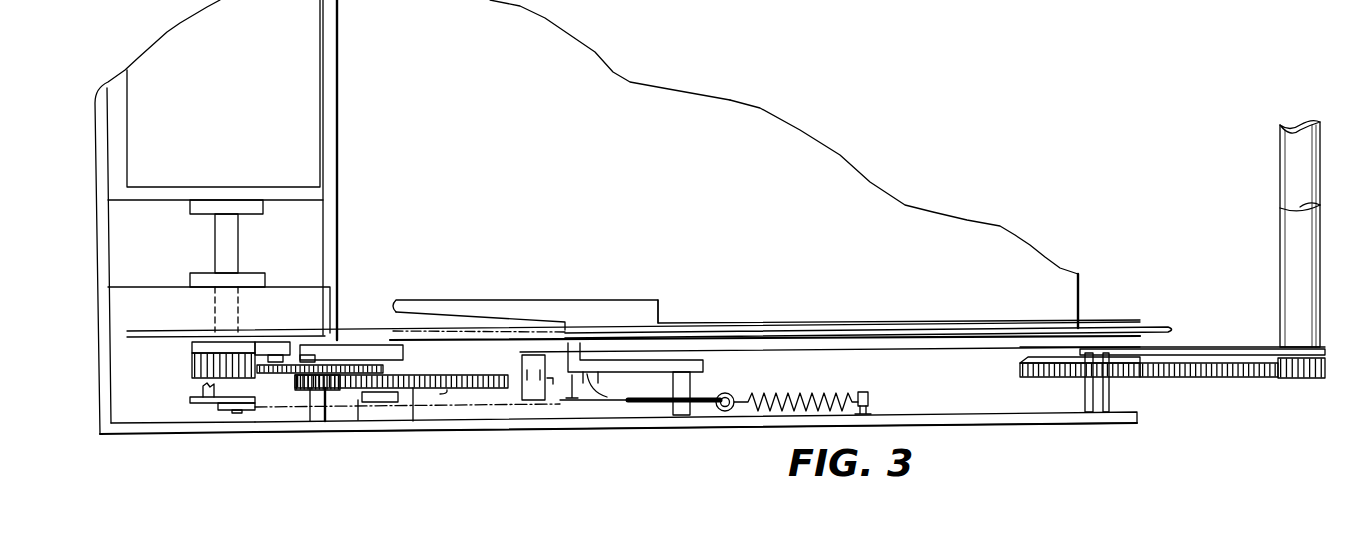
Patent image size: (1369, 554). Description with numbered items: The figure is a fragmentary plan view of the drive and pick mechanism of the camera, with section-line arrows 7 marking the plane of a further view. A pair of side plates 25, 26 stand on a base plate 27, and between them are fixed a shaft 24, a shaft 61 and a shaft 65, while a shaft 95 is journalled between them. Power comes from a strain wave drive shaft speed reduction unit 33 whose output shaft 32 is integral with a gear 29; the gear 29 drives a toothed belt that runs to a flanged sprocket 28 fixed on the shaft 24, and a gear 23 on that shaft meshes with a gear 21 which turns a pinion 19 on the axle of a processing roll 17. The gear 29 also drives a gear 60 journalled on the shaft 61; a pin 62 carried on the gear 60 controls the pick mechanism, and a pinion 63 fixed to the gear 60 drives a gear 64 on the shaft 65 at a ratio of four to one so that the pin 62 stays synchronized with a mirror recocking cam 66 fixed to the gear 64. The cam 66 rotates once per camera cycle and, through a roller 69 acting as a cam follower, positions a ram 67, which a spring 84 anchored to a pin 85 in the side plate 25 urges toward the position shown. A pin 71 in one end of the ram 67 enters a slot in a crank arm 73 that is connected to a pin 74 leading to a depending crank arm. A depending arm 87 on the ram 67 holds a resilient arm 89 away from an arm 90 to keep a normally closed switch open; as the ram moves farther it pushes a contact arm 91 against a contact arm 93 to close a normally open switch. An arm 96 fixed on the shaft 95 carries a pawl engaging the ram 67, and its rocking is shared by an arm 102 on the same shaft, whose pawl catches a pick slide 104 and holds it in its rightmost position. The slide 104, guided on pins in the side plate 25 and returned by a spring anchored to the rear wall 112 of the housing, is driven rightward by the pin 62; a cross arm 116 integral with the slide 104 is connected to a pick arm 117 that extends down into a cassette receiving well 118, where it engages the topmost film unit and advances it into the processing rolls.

The section line 7- 7 is at (157, 358).
The processing roll 17 is at (1321, 310).
The pinion 19 is at (1290, 380).
The gear 21 is at (1228, 379).
The gear 23 is at (1133, 379).
The shaft 24 is at (1110, 395).
The side plate 25 is at (1027, 328).
The side plate 26 is at (1026, 424).
The base plate 27 is at (913, 208).
The sprocket 28 is at (1030, 360).
The gear 29 is at (192, 372).
The output shaft 32 is at (240, 262).
The strain wave drive shaft speed reduction unit 33 is at (272, 206).
The gear 60 is at (385, 365).
The shaft 61 is at (312, 420).
The pin 62 is at (278, 355).
The pinion 63 is at (296, 392).
The gear 64 is at (445, 388).
The shaft 65 is at (415, 410).
The mirror recocking cam 66 is at (447, 396).
The ram 67 is at (356, 408).
The roller 69 is at (390, 403).
The pin 71 is at (238, 414).
The crank arm 73 is at (210, 405).
The pin 74 is at (202, 391).
The spring 84 is at (818, 395).
The pin 85 is at (870, 393).
The depending arm 87 is at (606, 403).
The resilient arm 89 is at (610, 390).
The arm 90 is at (585, 417).
The contact arm 91 is at (555, 403).
The contact arm 93 is at (530, 383).
The shaft 95 is at (692, 385).
The arm 96 is at (660, 405).
The arm 102 is at (668, 358).
The pick slide 104 is at (641, 316).
The rear wall 112 is at (97, 250).
The cross arm 116 is at (600, 320).
The pick arm 117 is at (500, 302).
The cassette receiving well 118 is at (556, 55).